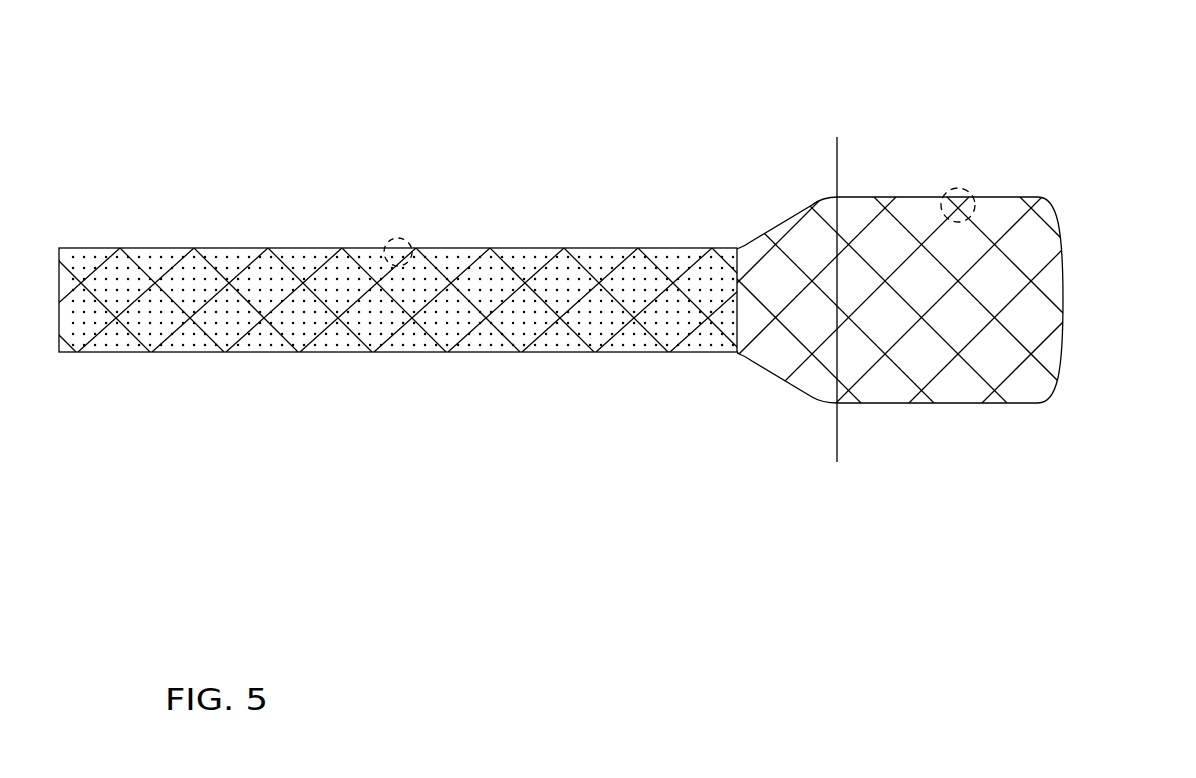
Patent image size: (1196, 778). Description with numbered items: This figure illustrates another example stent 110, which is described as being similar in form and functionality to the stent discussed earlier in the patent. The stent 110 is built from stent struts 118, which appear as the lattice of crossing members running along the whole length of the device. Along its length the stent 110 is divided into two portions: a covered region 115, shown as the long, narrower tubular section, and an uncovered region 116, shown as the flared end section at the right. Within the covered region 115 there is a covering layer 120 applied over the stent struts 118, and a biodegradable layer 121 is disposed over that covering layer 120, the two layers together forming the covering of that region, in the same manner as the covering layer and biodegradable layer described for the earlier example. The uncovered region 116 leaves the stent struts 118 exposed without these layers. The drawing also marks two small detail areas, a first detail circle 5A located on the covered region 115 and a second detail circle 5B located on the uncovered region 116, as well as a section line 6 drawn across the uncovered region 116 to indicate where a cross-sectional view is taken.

The stent 110 is at (556, 64).
The covered region 115 is at (737, 368).
The uncovered region 116 is at (1060, 110).
The stent struts 118 is at (139, 260).
The covering layer 120 is at (592, 258).
The biodegradable layer 121 is at (265, 267).
The detail view region 5A is at (385, 236).
The detail view region 5B is at (972, 197).
The section line 6- 6 is at (872, 462).